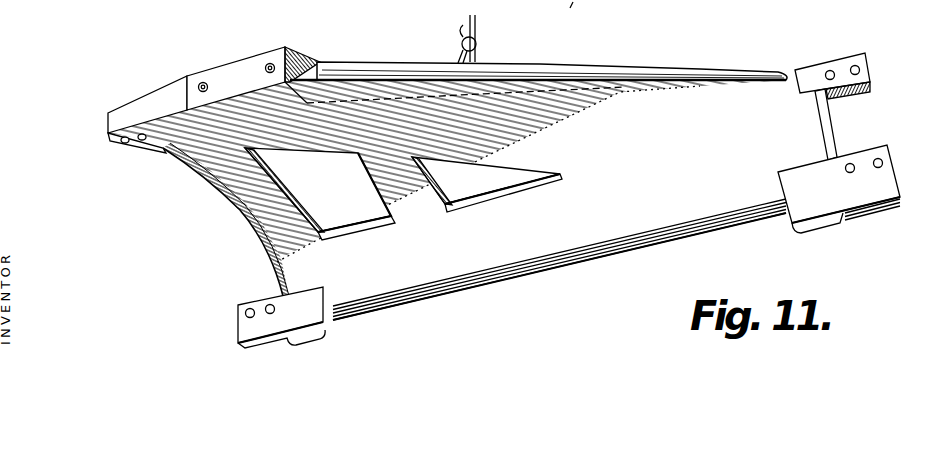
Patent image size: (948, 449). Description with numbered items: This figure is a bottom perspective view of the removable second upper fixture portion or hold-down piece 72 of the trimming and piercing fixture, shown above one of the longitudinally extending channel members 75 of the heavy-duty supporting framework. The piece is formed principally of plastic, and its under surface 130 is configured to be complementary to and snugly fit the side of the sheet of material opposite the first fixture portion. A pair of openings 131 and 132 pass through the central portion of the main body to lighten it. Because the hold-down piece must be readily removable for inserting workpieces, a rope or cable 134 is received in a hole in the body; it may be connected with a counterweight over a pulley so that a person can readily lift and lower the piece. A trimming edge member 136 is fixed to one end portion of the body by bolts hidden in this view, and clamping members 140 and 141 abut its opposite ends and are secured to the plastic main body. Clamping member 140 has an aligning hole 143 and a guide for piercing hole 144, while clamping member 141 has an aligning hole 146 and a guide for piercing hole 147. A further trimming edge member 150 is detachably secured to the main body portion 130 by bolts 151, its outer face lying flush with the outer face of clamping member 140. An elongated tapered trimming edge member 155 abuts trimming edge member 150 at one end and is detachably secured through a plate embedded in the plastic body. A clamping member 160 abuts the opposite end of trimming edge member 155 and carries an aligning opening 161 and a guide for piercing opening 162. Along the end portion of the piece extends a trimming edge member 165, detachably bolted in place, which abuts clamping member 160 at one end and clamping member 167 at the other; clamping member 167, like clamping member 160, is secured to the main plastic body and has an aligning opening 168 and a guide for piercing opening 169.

The second upper fixture portion or hold-down piece 72 is at (877, 118).
The channel member 75 is at (583, 11).
The under surface / main body portion 130 is at (625, 165).
The opening 131 is at (382, 177).
The opening 132 is at (445, 157).
The rope or cable 134 is at (480, 28).
The trimming edge member 136 is at (219, 192).
The clamping member 140 is at (127, 112).
The clamping member 141 is at (238, 332).
The aligning hole 143 is at (121, 142).
The guide for piercing hole 144 is at (143, 140).
The aligning hole 146 is at (248, 309).
The guide for piercing hole 147 is at (270, 305).
The trimming edge member 150 is at (278, 45).
The bolts 151 is at (203, 82).
The elongated tapered trimming edge member 155 is at (597, 87).
The clamping member 160 is at (842, 63).
The aligning opening 161 is at (860, 70).
The guide for piercing opening 162 is at (828, 71).
The trimming edge member 165 is at (826, 111).
The clamping member 167 is at (868, 200).
The aligning opening 168 is at (888, 163).
The guide for piercing opening 169 is at (850, 164).